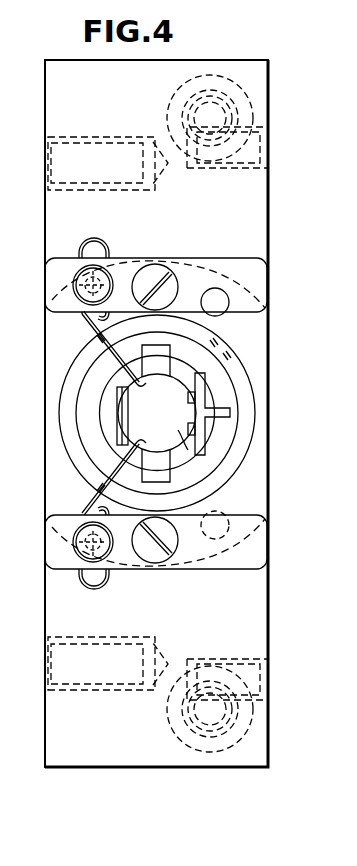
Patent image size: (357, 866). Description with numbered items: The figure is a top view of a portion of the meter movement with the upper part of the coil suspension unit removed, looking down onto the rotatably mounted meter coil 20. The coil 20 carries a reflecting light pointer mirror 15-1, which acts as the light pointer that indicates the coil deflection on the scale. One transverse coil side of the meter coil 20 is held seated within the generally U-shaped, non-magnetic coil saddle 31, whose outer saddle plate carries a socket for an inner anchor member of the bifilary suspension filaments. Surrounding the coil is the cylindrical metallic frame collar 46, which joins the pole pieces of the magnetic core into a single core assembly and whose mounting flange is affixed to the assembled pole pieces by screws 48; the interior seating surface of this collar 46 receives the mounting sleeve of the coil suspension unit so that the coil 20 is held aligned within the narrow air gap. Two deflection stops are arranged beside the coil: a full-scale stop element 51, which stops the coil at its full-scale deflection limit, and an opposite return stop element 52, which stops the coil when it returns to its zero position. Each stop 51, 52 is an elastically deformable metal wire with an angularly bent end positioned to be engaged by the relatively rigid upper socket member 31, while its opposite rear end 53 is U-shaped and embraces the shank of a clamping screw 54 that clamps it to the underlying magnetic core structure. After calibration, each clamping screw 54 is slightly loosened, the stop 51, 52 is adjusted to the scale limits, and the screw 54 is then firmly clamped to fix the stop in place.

The reflecting light pointer mirror 15-1 is at (117, 412).
The meter coil 20 is at (166, 349).
The coil saddle 31 is at (181, 451).
The frame collar 46 is at (240, 378).
The screw 48 is at (153, 272).
The full-scale stop element 51 is at (84, 320).
The return stop element 52 is at (130, 452).
The rear end of stop wire 53 is at (94, 238).
The clamping screw 54 is at (88, 282).